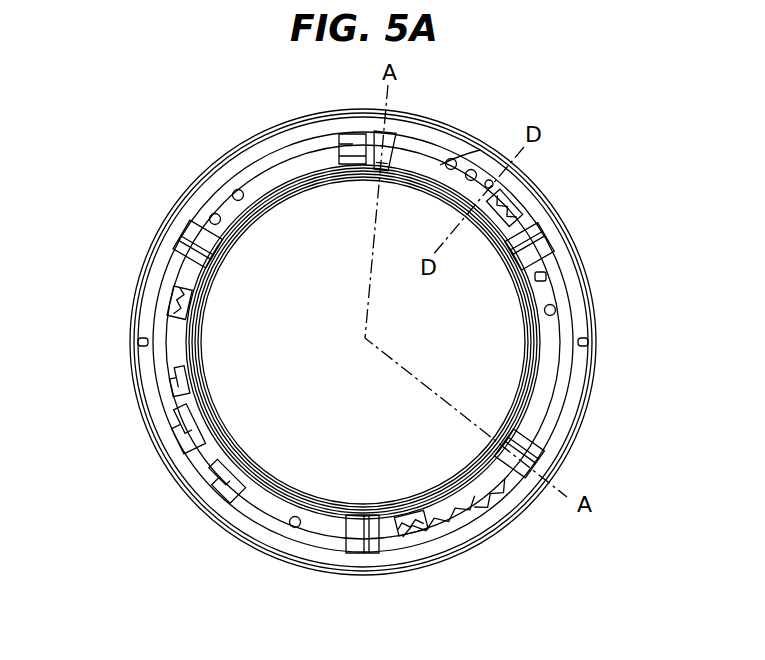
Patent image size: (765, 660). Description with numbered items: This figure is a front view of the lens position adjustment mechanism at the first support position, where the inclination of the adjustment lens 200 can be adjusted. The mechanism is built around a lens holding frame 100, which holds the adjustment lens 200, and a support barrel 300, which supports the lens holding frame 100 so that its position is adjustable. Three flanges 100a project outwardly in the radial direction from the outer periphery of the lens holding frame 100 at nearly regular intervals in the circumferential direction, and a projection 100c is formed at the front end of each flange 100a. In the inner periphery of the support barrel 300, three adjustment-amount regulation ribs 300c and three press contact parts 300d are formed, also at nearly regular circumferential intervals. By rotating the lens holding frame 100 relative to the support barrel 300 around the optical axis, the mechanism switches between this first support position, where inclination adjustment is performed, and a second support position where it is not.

The lens holding frame 100 is at (302, 185).
The flange 100a is at (153, 330).
The projection 100c is at (467, 523).
The adjustment lens 200 is at (292, 453).
The support barrel 300 is at (573, 288).
The adjustment-amount regulation rib 300c is at (167, 287).
The press contact part 300d is at (193, 235).